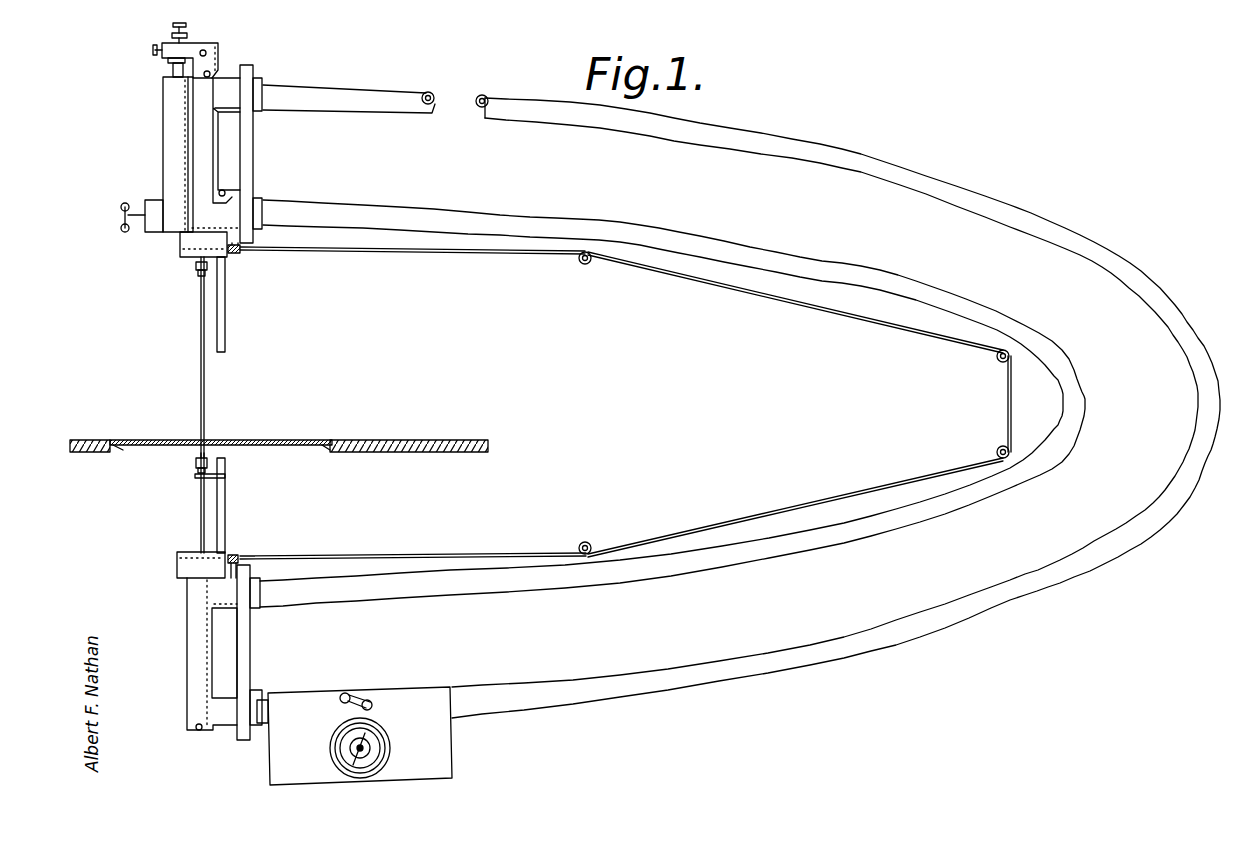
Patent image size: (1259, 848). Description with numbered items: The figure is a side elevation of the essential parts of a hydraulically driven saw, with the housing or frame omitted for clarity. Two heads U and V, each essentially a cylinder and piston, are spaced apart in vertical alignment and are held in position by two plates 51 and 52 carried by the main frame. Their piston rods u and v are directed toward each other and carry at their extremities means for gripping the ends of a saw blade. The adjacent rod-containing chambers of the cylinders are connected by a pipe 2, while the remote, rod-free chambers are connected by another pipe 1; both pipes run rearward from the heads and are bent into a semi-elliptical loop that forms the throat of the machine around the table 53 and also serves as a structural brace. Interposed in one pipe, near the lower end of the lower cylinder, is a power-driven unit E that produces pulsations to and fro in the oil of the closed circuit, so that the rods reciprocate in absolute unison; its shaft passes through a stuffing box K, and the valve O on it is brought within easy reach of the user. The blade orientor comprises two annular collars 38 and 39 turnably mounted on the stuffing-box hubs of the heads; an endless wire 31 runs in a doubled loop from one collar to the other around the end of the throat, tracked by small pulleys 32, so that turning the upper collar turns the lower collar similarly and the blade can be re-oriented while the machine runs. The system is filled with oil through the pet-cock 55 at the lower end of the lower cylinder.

The pipe 1 is at (434, 92).
The pipe 2 is at (438, 210).
The endless wire 31 is at (431, 255).
The pulleys 32 is at (240, 257).
The annular collar 38 is at (178, 249).
The annular collar 39 is at (177, 569).
The plate 51 is at (262, 165).
The plate 52 is at (252, 658).
The table 53 is at (282, 437).
The pet-cock 55 is at (198, 733).
The upper head U is at (163, 143).
The lower head V is at (187, 648).
The piston rod u is at (226, 304).
The piston rod v is at (225, 526).
The power-driven unit E is at (452, 757).
The stuffing box K is at (382, 734).
The valve O is at (363, 693).